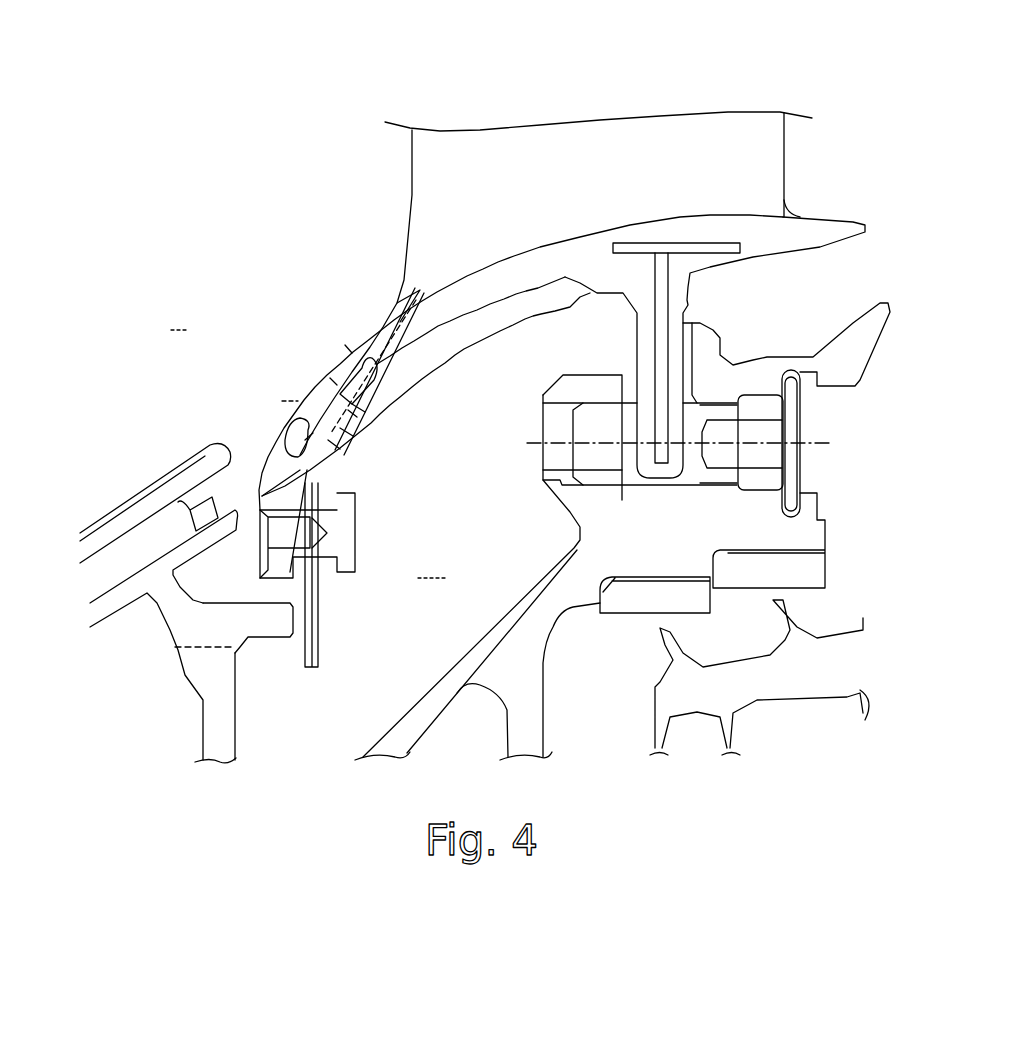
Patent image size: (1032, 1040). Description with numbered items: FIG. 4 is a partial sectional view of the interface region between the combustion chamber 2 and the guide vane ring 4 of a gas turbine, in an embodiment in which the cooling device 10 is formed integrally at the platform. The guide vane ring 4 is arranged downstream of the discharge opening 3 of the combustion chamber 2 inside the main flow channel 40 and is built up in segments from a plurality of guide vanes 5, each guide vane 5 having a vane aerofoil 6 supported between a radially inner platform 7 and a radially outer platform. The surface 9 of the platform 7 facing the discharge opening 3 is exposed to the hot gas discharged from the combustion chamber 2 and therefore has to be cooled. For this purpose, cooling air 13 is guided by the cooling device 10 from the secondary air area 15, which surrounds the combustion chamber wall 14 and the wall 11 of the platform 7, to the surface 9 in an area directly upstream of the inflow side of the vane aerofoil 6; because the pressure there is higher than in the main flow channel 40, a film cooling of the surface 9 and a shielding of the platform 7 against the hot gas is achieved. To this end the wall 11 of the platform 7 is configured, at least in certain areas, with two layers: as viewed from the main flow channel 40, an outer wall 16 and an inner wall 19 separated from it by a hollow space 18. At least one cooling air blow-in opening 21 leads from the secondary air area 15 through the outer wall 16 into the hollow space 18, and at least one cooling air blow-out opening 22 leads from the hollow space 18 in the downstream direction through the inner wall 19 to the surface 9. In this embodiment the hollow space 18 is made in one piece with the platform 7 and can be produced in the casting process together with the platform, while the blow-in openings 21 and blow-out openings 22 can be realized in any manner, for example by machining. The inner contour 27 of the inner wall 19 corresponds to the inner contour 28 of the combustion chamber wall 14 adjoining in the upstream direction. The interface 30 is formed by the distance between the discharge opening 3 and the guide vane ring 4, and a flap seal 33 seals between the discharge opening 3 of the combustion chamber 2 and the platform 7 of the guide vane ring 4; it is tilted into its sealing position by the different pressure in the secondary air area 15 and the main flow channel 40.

The combustion chamber 2 is at (180, 316).
The discharge opening 3 is at (228, 440).
The guide vane ring 4 is at (787, 147).
The guide vane 5 is at (777, 180).
The vane aerofoil 6 is at (643, 130).
The radially inner platform 7 is at (413, 333).
The surface 9 is at (433, 290).
The cooling device 10 is at (313, 393).
The wall 11 is at (393, 382).
The cooling air 13 is at (420, 290).
The combustion chamber wall 14 is at (103, 610).
The secondary air area 15 is at (432, 566).
The outer wall 16 is at (300, 470).
The hollow space 18 is at (313, 433).
The inner wall 19 is at (337, 385).
The cooling air blow-in opening 21 is at (357, 417).
The cooling air blow-out opening 22 is at (352, 353).
The inner contour 27 is at (292, 400).
The inner contour 28 is at (125, 493).
The interface 30 is at (243, 565).
The flap seal 33 is at (318, 632).
The main flow channel 40 is at (315, 148).